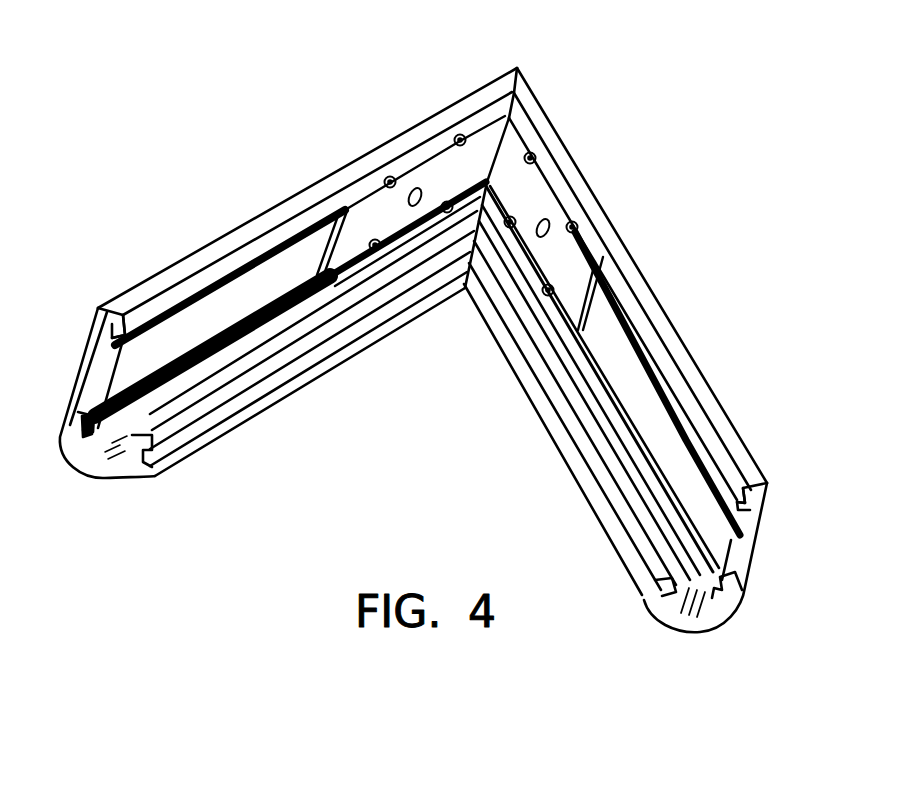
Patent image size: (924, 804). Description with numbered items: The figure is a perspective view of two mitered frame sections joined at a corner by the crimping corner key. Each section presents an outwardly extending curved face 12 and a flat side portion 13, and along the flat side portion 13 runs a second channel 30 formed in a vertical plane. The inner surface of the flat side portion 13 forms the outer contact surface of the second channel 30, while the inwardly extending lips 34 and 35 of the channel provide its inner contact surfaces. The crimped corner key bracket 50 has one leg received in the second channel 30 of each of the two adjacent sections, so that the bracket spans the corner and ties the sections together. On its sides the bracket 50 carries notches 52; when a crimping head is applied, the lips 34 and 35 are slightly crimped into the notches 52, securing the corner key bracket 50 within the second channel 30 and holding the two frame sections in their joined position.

The outwardly extending curved face 12 is at (118, 470).
The flat side portion 13 is at (672, 317).
The second channel 30 is at (107, 310).
The inwardly extending lip 34 is at (208, 277).
The inwardly extending lip 35 is at (95, 472).
The crimped corner key bracket 50 is at (530, 190).
The notches 52 is at (461, 135).